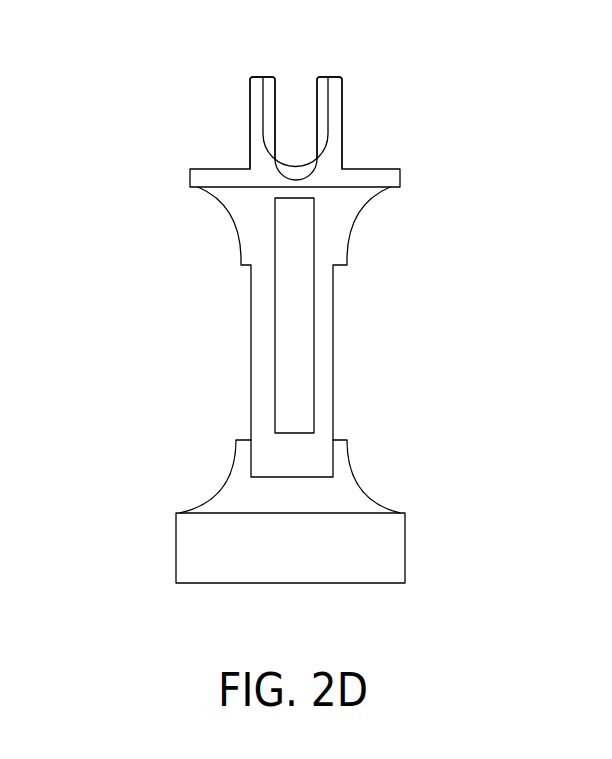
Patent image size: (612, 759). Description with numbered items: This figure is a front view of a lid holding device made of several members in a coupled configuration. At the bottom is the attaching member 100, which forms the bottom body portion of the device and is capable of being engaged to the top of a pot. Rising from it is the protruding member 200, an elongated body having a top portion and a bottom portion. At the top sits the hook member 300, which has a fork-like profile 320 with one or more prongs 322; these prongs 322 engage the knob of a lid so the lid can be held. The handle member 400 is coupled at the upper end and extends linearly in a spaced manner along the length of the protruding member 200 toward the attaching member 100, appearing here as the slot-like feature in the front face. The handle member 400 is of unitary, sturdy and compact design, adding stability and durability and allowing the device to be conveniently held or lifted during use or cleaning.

The attaching member 100 is at (160, 547).
The protruding member 200 is at (240, 336).
The hook member 300 is at (376, 112).
The fork-like profile 320 is at (234, 133).
The prongs 322 is at (243, 87).
The handle member 400 is at (301, 306).